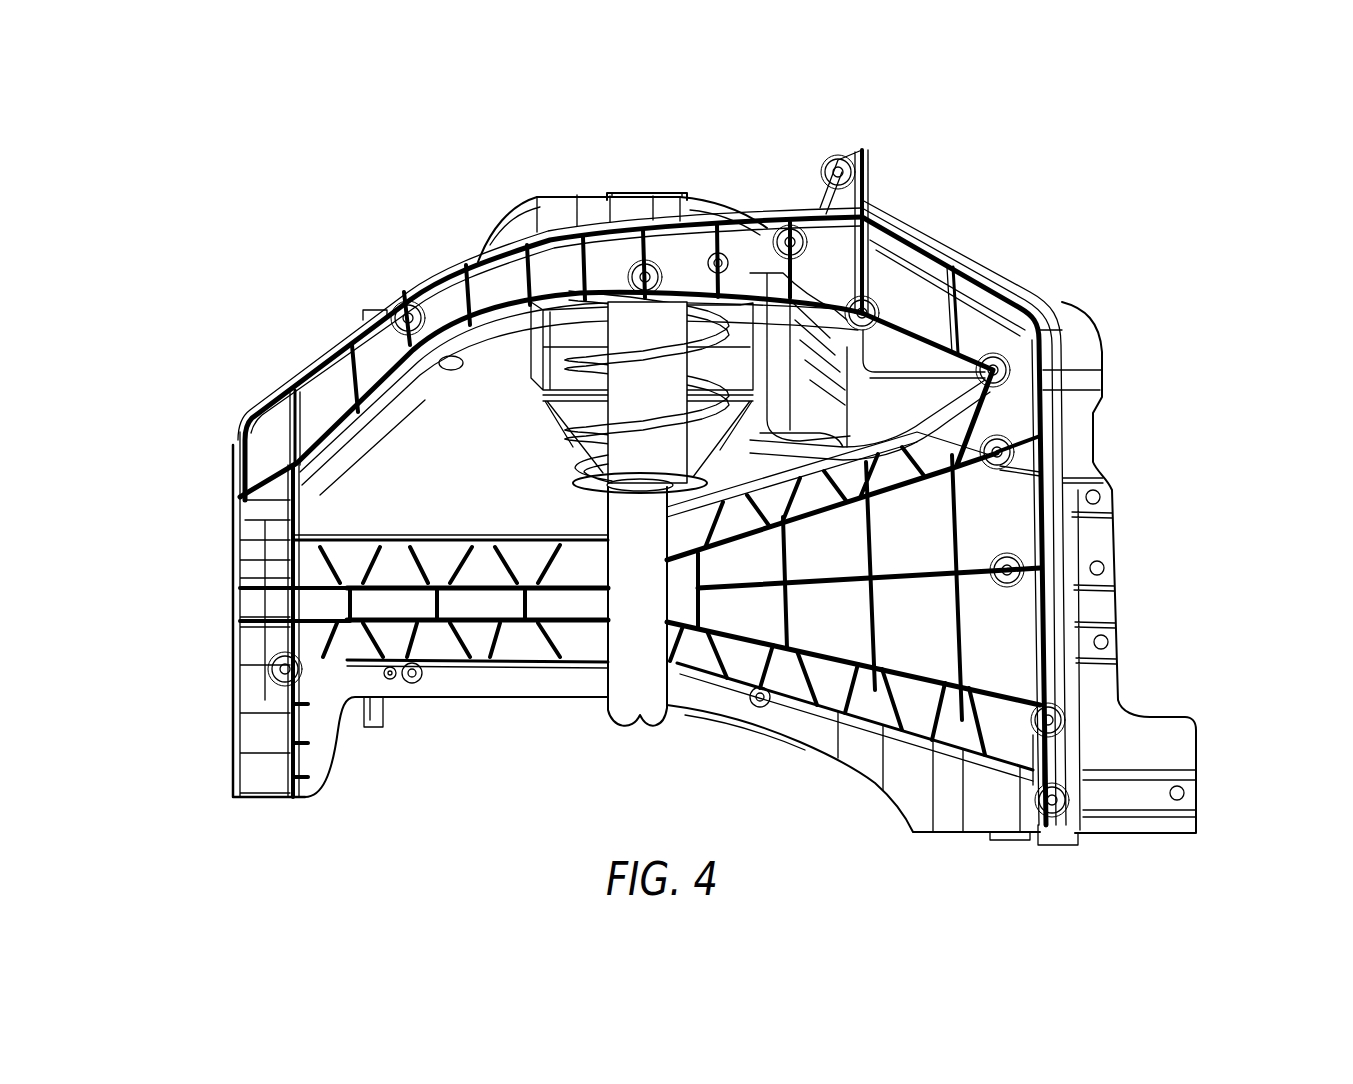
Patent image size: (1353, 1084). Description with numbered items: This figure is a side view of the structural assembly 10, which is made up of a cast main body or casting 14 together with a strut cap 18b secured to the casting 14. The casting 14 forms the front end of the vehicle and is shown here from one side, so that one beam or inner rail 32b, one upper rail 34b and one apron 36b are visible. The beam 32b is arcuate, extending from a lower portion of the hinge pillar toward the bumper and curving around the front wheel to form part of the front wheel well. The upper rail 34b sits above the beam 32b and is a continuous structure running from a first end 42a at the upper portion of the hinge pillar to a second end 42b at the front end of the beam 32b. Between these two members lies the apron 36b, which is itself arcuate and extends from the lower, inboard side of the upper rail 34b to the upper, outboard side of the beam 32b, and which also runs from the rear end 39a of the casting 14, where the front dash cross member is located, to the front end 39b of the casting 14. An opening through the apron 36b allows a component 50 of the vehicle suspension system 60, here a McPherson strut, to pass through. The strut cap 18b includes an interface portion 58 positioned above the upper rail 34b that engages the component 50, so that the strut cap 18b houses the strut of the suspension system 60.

The structural assembly 10 is at (1018, 178).
The casting 14 is at (382, 238).
The strut cap 18b is at (582, 180).
The beam 32b is at (335, 598).
The upper rail 34b is at (322, 352).
The apron 36b is at (430, 495).
The rear end 39a is at (1120, 724).
The front end 39b is at (208, 773).
The first end 42a is at (988, 326).
The second end 42b is at (270, 440).
The component 50 is at (707, 333).
The interface portion 58 is at (528, 203).
The vehicle suspension system 60 is at (578, 699).